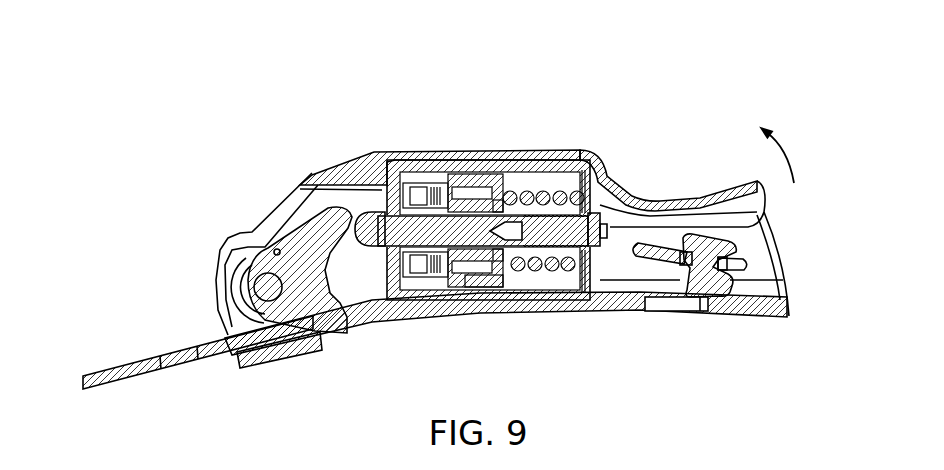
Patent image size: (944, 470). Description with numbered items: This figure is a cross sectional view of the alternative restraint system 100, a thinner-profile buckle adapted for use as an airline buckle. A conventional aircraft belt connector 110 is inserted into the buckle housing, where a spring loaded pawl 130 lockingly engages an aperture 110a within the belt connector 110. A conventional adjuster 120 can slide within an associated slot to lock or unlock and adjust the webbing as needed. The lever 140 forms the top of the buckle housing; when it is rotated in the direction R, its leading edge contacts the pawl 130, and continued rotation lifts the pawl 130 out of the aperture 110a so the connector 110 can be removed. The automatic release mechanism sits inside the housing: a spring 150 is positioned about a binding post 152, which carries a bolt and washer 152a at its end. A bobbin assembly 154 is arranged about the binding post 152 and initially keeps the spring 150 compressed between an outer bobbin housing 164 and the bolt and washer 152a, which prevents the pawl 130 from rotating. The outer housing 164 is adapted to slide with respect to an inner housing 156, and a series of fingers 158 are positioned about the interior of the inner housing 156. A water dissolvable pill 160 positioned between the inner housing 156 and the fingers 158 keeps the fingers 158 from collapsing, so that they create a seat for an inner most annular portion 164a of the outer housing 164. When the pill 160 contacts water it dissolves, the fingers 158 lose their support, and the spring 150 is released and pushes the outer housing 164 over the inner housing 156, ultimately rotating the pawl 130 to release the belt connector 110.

The restraint system 100 is at (647, 170).
The aircraft belt connector 110 is at (105, 380).
The aperture 110a is at (337, 342).
The adjuster 120 is at (747, 267).
The spring loaded pawl 130 is at (330, 227).
The lever 140 is at (431, 152).
The spring 150 is at (562, 198).
The binding post 152 is at (500, 230).
The bolt and washer 152a is at (600, 247).
The bobbin assembly 154 is at (517, 134).
The inner housing 156 is at (418, 185).
The fingers 158 is at (407, 202).
The water dissolvable pill 160 is at (452, 208).
The outer bobbin housing 164 is at (468, 262).
The inner most annular portion 164a is at (497, 212).